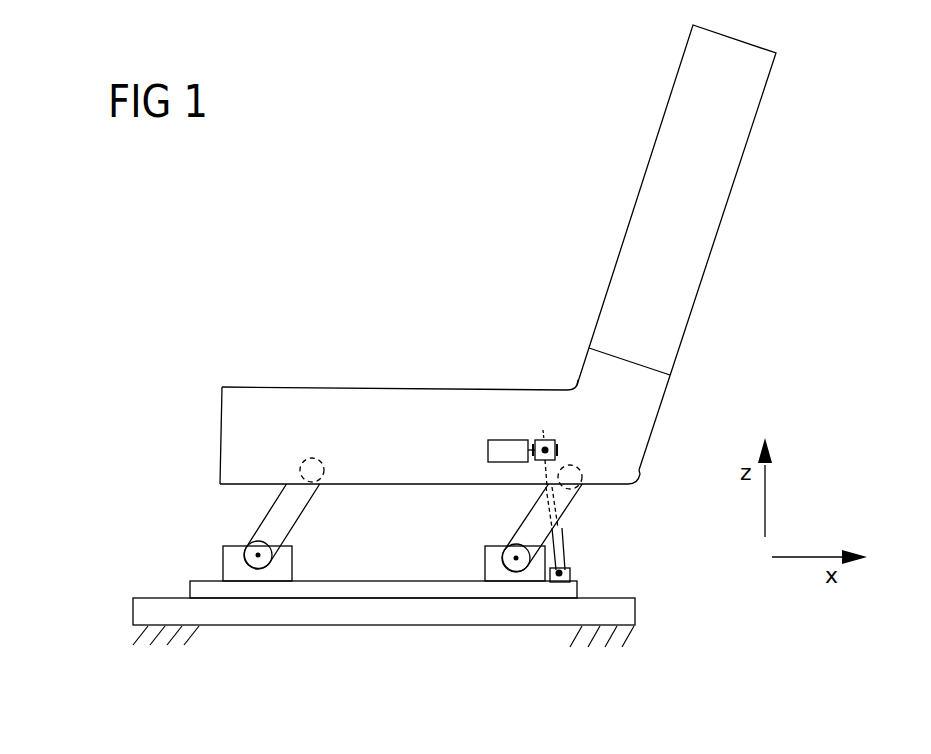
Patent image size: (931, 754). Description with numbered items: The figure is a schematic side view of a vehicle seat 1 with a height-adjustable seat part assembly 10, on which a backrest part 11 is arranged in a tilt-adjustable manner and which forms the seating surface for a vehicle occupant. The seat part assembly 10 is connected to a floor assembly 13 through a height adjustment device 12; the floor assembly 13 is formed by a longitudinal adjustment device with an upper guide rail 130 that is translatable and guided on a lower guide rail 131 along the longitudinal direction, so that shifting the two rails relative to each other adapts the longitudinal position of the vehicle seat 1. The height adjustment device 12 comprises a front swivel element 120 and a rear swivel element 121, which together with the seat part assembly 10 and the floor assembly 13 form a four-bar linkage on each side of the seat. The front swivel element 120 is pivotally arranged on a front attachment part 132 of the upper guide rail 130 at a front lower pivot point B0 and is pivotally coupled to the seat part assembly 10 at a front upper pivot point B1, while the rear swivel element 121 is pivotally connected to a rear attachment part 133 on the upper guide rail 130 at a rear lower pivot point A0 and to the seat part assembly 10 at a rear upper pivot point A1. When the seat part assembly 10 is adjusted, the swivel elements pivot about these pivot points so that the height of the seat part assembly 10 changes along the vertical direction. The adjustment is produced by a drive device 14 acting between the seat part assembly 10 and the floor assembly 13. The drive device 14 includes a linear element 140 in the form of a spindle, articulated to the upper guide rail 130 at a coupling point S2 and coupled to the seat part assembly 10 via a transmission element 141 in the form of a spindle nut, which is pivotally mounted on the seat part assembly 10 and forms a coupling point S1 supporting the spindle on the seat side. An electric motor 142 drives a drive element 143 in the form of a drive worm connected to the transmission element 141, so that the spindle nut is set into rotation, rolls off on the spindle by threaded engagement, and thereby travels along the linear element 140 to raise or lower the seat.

The vehicle seat 1 is at (468, 190).
The seat part assembly 10 is at (430, 412).
The backrest part 11 is at (700, 250).
The height adjustment device 12 is at (205, 522).
The floor assembly 13 is at (97, 612).
The drive device 14 is at (516, 411).
The front swivel element 120 is at (292, 522).
The rear swivel element 121 is at (530, 525).
The upper guide rail 130 is at (250, 592).
The lower guide rail 131 is at (327, 612).
The front attachment part 132 is at (278, 570).
The rear attachment part 133 is at (495, 575).
The linear element 140 is at (560, 542).
The transmission element 141 is at (546, 440).
The electric motor 142 is at (488, 452).
The drive element 143 is at (558, 450).
The coupling point S1 is at (552, 447).
The coupling point S2 is at (570, 568).
The rear lower pivot point A0 is at (516, 558).
The rear upper pivot point A1 is at (577, 477).
The front lower pivot point B0 is at (258, 555).
The front upper pivot point B1 is at (312, 470).